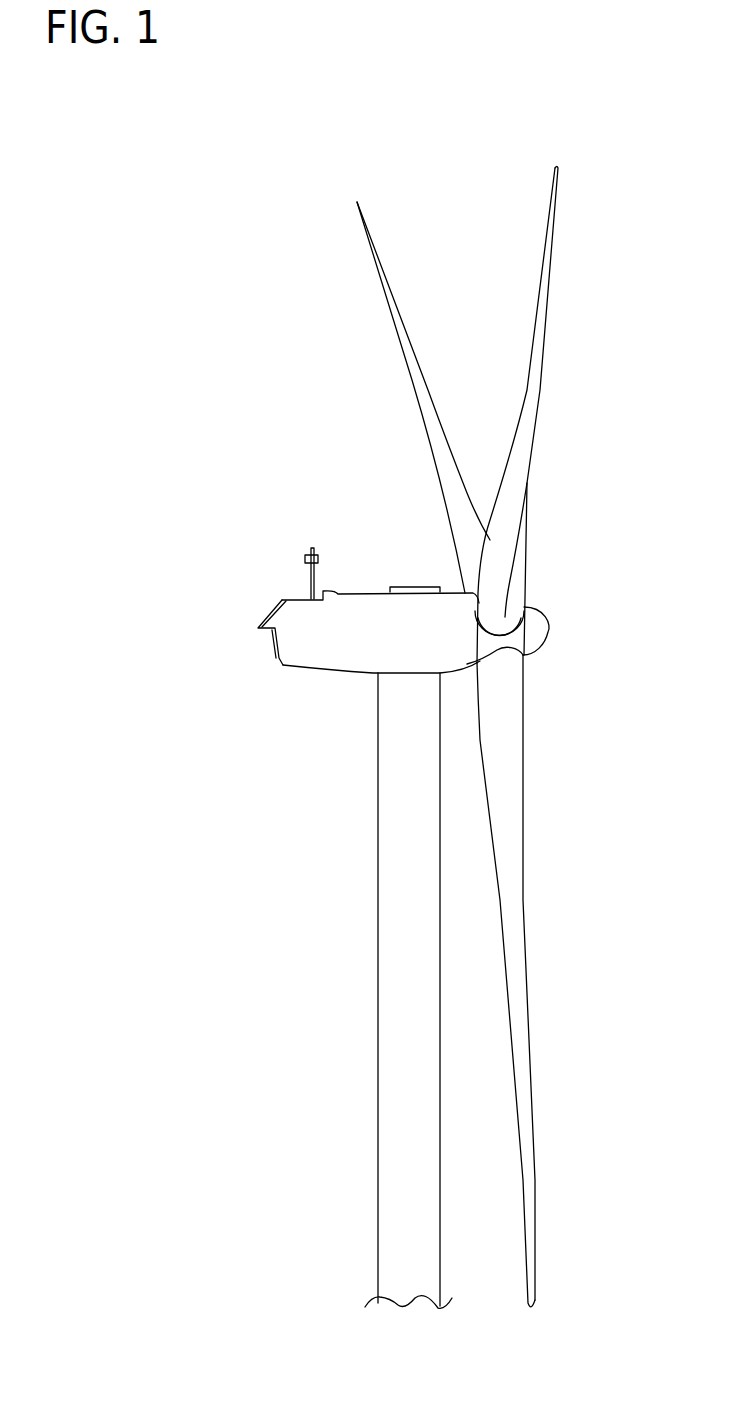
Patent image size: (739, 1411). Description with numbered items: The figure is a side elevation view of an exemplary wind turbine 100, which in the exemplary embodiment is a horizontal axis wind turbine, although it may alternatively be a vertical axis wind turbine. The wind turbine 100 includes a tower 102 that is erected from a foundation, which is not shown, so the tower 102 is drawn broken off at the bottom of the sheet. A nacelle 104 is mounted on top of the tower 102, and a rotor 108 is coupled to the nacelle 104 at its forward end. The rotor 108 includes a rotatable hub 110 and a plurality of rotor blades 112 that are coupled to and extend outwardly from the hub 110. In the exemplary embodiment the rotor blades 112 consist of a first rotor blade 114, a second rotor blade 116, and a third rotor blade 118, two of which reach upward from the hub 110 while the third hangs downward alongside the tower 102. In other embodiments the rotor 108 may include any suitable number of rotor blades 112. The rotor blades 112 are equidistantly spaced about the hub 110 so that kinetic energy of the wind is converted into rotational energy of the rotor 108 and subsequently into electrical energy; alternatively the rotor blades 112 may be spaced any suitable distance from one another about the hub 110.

The wind turbine 100 is at (226, 168).
The tower 102 is at (377, 782).
The nacelle 104 is at (368, 592).
The rotor 108 is at (590, 587).
The rotatable hub 110 is at (546, 632).
The rotor blades 112 is at (497, 235).
The first rotor blade 114 is at (542, 365).
The second rotor blade 116 is at (418, 357).
The third rotor blade 118 is at (525, 870).